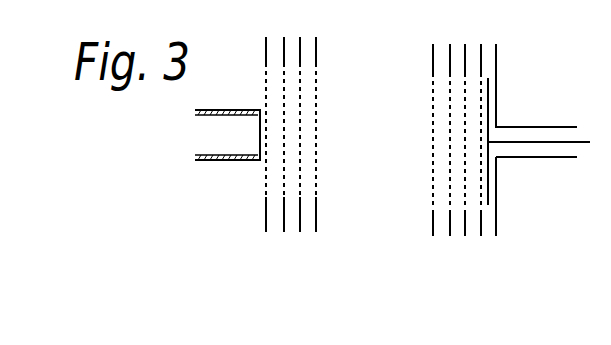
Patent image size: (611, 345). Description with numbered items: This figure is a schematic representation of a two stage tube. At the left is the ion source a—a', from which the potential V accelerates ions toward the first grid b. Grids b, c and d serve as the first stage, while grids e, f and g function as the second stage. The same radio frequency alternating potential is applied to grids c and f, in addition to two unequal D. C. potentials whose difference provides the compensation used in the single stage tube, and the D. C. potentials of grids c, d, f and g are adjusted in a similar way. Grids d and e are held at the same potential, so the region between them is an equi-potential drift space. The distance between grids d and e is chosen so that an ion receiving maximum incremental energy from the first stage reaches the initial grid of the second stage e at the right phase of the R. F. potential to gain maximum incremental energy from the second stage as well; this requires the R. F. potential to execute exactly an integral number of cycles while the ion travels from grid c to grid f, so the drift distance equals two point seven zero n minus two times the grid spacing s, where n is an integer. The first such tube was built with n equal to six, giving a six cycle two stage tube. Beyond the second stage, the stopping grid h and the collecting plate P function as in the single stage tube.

The ion source a is at (227, 160).
The ion source a' is at (246, 161).
The first grid b is at (284, 232).
The grid c is at (300, 232).
The grid d is at (316, 232).
The initial grid of second stage e is at (433, 240).
The grid f is at (450, 240).
The grid g is at (465, 240).
The stopping grid h is at (481, 240).
The collecting plate P is at (490, 193).